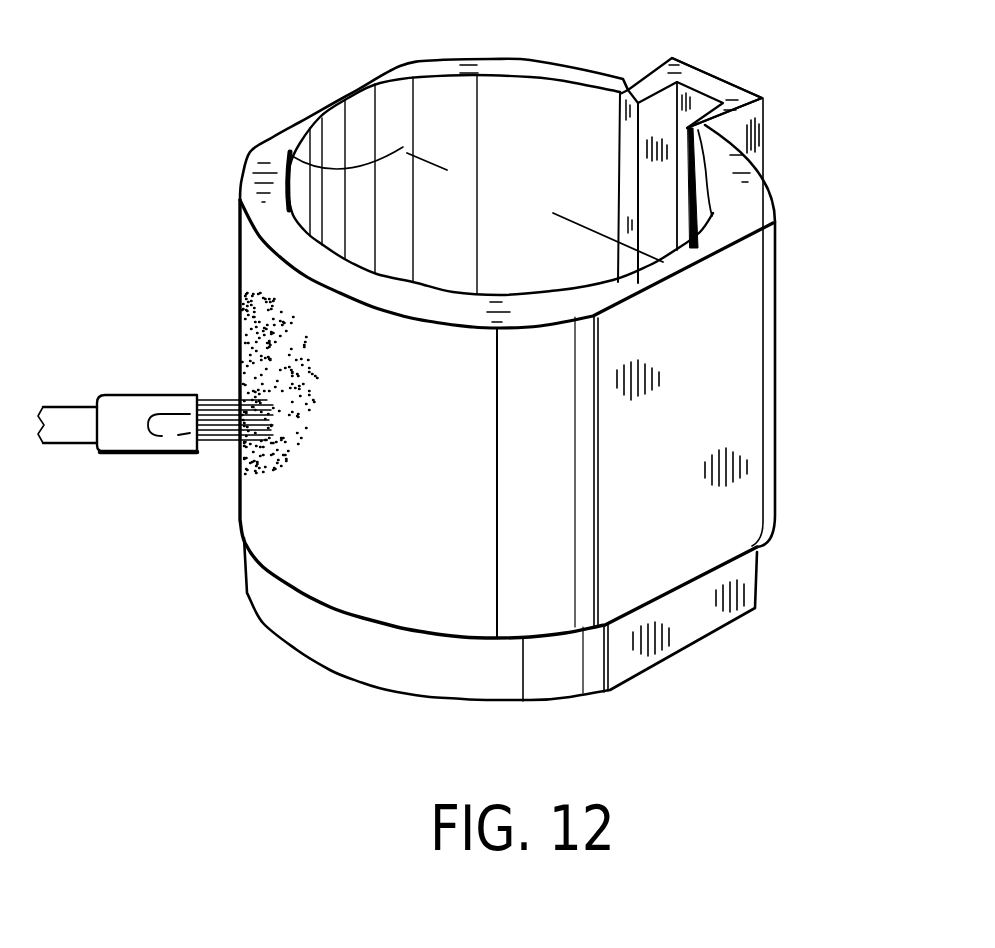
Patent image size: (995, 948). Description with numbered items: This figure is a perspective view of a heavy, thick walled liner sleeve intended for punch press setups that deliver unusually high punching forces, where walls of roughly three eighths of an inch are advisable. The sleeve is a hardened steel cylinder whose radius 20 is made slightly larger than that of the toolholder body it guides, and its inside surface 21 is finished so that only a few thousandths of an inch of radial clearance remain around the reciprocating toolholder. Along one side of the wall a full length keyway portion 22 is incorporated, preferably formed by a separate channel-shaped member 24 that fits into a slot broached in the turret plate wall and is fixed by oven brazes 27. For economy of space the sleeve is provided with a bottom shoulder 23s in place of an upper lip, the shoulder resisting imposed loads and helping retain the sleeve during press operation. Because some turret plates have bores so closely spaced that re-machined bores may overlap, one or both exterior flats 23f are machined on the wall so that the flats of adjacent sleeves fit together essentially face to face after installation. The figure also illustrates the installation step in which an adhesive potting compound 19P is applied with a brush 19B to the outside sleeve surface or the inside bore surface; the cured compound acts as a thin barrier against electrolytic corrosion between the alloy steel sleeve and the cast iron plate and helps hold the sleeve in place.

The radius 20 is at (288, 165).
The inside surface 21 is at (350, 108).
The keyway portion 22 is at (742, 97).
The channel-shaped member 24 is at (698, 77).
The oven brazes 27 is at (619, 153).
The flats 23f is at (720, 385).
The bottom shoulder 23s is at (265, 568).
The brush 19B is at (128, 430).
The adhesive potting compound 19P is at (238, 335).